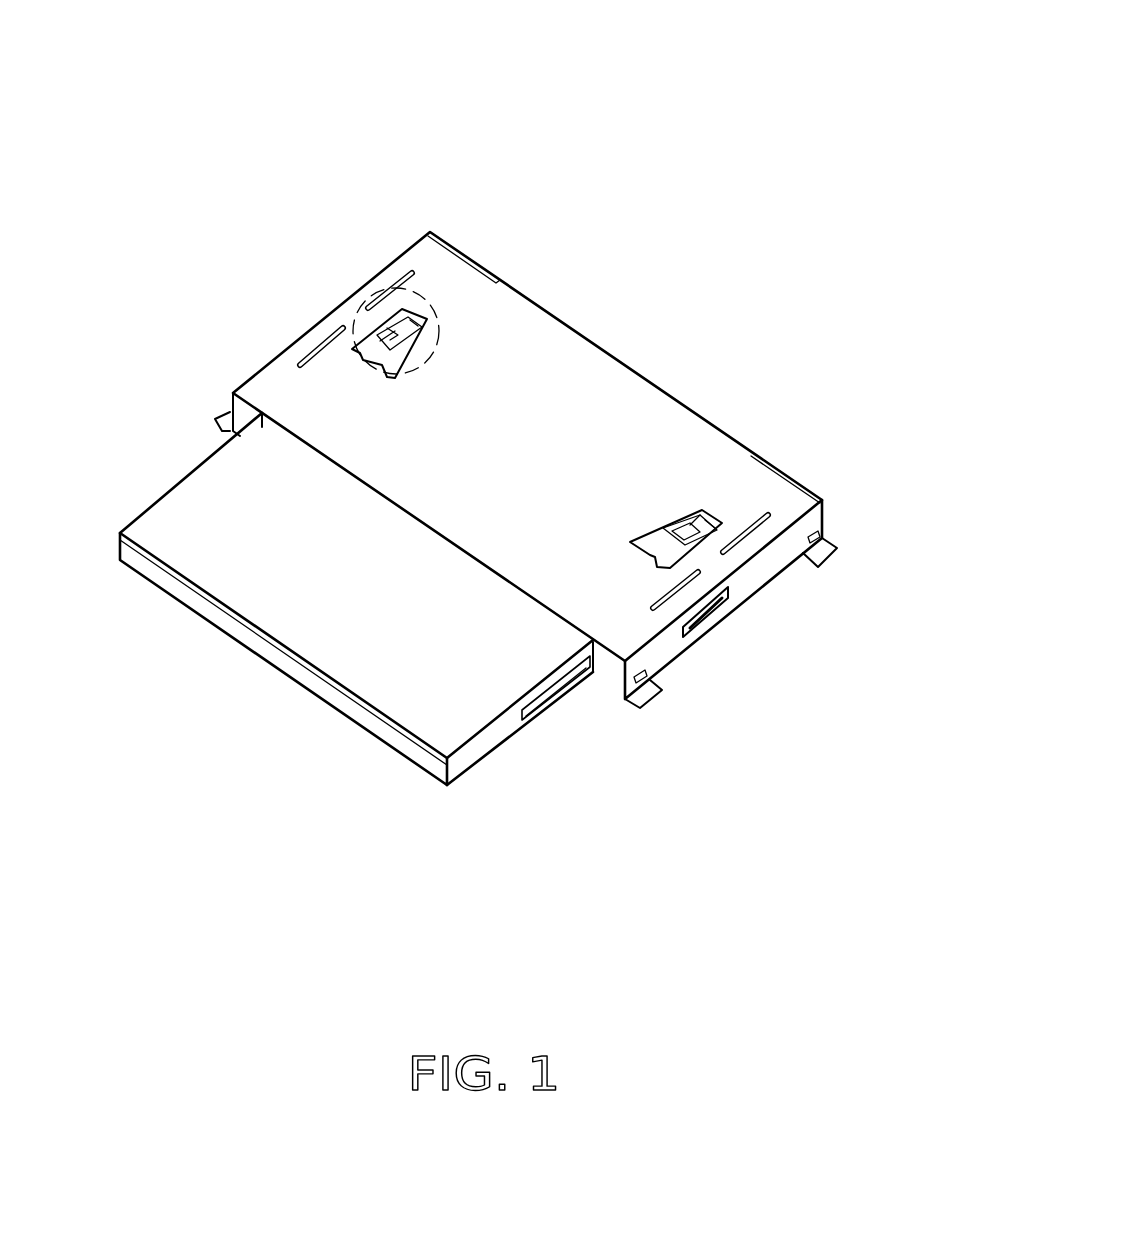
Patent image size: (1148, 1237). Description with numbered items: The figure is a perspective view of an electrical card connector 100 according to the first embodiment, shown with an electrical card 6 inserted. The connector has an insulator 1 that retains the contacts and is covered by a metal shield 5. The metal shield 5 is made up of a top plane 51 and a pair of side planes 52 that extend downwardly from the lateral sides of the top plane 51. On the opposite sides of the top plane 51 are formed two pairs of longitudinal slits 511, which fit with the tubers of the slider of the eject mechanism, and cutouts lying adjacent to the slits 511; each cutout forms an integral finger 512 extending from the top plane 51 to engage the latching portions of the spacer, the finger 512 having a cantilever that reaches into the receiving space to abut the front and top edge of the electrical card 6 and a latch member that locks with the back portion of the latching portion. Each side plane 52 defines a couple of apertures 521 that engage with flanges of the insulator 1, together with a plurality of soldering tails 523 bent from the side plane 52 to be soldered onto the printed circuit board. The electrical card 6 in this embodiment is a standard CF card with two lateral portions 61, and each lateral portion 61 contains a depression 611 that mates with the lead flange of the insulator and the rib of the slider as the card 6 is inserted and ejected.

The electrical card connector 100 is at (519, 43).
The insulator 1 is at (615, 672).
The metal shield 5 is at (563, 383).
The top plane 51 is at (648, 423).
The longitudinal slit 511 is at (750, 517).
The finger 512 is at (420, 306).
The side plane 52 is at (752, 578).
The aperture 521 is at (824, 520).
The soldering tail 523 is at (827, 558).
The electrical card 6 is at (328, 627).
The lateral portion 61 is at (478, 743).
The depression 611 is at (558, 683).